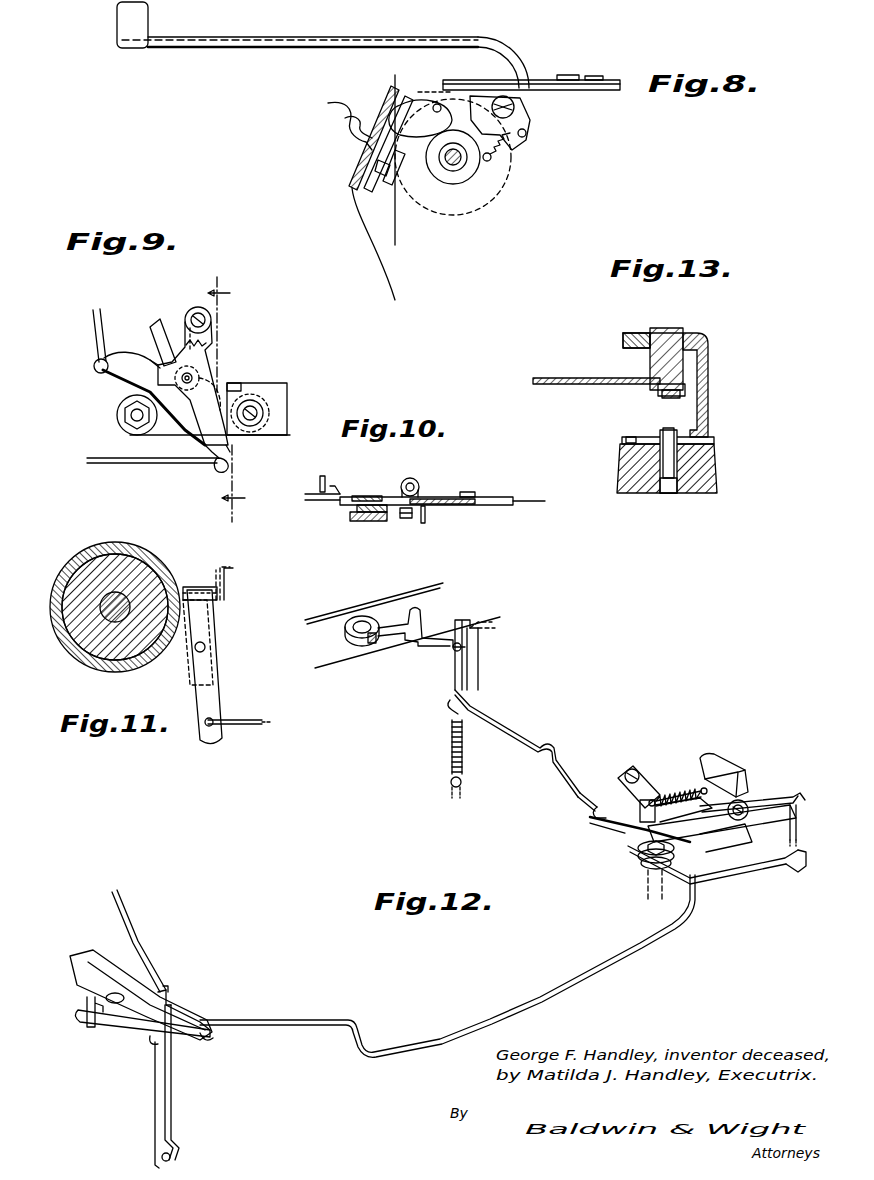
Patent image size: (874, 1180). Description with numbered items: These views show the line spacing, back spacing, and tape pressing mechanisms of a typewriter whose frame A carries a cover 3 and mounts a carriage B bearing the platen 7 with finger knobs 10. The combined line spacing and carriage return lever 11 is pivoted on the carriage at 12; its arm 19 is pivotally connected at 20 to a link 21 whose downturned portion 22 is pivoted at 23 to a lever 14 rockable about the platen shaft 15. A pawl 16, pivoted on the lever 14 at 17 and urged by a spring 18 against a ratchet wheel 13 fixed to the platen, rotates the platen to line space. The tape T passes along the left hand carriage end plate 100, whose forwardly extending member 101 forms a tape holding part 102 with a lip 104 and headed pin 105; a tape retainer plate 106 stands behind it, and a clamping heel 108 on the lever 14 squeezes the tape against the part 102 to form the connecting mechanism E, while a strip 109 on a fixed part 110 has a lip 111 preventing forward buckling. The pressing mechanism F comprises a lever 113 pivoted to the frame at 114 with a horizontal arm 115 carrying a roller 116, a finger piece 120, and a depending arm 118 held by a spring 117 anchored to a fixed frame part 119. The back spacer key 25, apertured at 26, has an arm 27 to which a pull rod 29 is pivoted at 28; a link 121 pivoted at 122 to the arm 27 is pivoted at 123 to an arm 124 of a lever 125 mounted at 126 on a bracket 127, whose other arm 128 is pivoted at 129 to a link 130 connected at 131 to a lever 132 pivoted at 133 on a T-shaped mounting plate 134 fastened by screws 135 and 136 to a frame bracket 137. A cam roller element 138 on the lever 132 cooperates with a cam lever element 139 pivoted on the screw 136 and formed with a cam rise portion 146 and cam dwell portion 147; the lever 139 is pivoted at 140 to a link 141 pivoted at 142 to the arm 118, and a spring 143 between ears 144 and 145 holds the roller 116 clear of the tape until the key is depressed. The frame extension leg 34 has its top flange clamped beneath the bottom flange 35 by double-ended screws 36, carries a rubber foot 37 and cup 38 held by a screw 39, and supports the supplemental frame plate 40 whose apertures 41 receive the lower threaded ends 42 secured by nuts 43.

In FIG. 8, the mask or cover 3 is at (326, 106).
In FIG. 11, the platen 7 is at (70, 658).
In FIG. 9, the finger knobs 10 is at (226, 398).
In FIG. 11, the finger knobs 10 is at (230, 524).
In FIG. 8, the combined line spacing and carriage return lever 11 is at (288, 37).
In FIG. 8, the pivot 12 is at (590, 78).
In FIG. 8, the ratchet wheel 13 is at (500, 185).
In FIG. 8, the lever 14 is at (455, 128).
In FIG. 8, the platen shaft 15 is at (450, 165).
In FIG. 11, the platen shaft 15 is at (100, 660).
In FIG. 8, the pawl 16 is at (528, 122).
In FIG. 8, the pivot 17 is at (515, 106).
In FIG. 8, the spring 18 is at (508, 160).
In FIG. 8, the arm 19 is at (578, 90).
In FIG. 8, the pivotal connection 20 is at (563, 75).
In FIG. 8, the link 21 is at (500, 75).
In FIG. 8, the downturned portion 22 is at (435, 100).
In FIG. 8, the pivot 23 is at (418, 190).
In FIG. 12, the back spacer key 25 is at (180, 1160).
In FIG. 12, the aperture 26 is at (160, 1155).
In FIG. 12, the vertically extending arm 27 is at (173, 1080).
In FIG. 12, the pivot 28 is at (172, 1000).
In FIG. 12, the pull rod 29 is at (140, 938).
In FIG. 13, the extension legs 34 is at (709, 404).
In FIG. 13, the bottom flange 35 is at (640, 330).
In FIG. 13, the double-ended screws 36 is at (648, 360).
In FIG. 13, the rubber supporting feet 37 is at (716, 470).
In FIG. 13, the cups 38 is at (714, 444).
In FIG. 13, the screws 39 is at (664, 495).
In FIG. 13, the supplemental frame plate 40 is at (553, 376).
In FIG. 13, the apertures 41 is at (625, 386).
In FIG. 13, the lower threaded ends 42 is at (668, 400).
In FIG. 13, the nuts 43 is at (658, 392).
In FIG. 8, the left hand carriage end plate 100 is at (397, 228).
In FIG. 8, the forwardly extending member 101 is at (385, 215).
In FIG. 8, the tape holding part 102 is at (384, 98).
In FIG. 8, the lip 104 is at (396, 88).
In FIG. 8, the headed pin 105 is at (378, 192).
In FIG. 8, the tape retainer plate 106 is at (375, 170).
In FIG. 8, the clamping heel 108 is at (356, 144).
In FIG. 8, the strip 109 is at (356, 160).
In FIG. 8, the fixed part 110 is at (372, 185).
In FIG. 8, the lip 111 is at (345, 125).
In FIG. 11, the lever 113 is at (228, 694).
In FIG. 12, the lever 113 is at (465, 612).
In FIG. 11, the pivot 114 is at (206, 645).
In FIG. 12, the pivot 114 is at (455, 682).
In FIG. 12, the horizontal arm 115 is at (425, 648).
In FIG. 11, the roller 116 is at (205, 585).
In FIG. 12, the roller 116 is at (364, 645).
In FIG. 12, the spring 117 is at (450, 758).
In FIG. 11, the depending arm 118 is at (192, 670).
In FIG. 12, the depending arm 118 is at (476, 700).
In FIG. 12, the fixed frame part 119 is at (440, 790).
In FIG. 11, the finger piece 120 is at (228, 566).
In FIG. 12, the finger piece 120 is at (428, 598).
In FIG. 12, the link 121 is at (130, 1042).
In FIG. 12, the pivot 122 is at (158, 1060).
In FIG. 12, the pivot 123 is at (90, 1030).
In FIG. 12, the arm 124 is at (86, 1018).
In FIG. 12, the lever 125 is at (116, 980).
In FIG. 12, the pivot 126 is at (125, 992).
In FIG. 12, the frame mounted bracket 127 is at (78, 960).
In FIG. 12, the arm 128 is at (188, 1022).
In FIG. 12, the pivot 129 is at (212, 1042).
In FIG. 9, the link 130 is at (135, 466).
In FIG. 10, the link 130 is at (304, 497).
In FIG. 12, the link 130 is at (436, 1026).
In FIG. 9, the connection 131 is at (208, 470).
In FIG. 12, the connection 131 is at (790, 882).
In FIG. 9, the lever 132 is at (232, 452).
In FIG. 10, the lever 132 is at (331, 511).
In FIG. 12, the lever 132 is at (722, 880).
In FIG. 9, the pivot 133 is at (212, 316).
In FIG. 10, the pivot 133 is at (478, 494).
In FIG. 12, the pivot 133 is at (634, 768).
In FIG. 9, the T-shaped mounting plate 134 is at (210, 335).
In FIG. 10, the T-shaped mounting plate 134 is at (450, 497).
In FIG. 12, the T-shaped mounting plate 134 is at (660, 792).
In FIG. 9, the screw 135 is at (117, 420).
In FIG. 12, the screw 135 is at (640, 860).
In FIG. 9, the screw 136 is at (272, 428).
In FIG. 12, the screw 136 is at (800, 772).
In FIG. 9, the frame bracket 137 is at (270, 402).
In FIG. 10, the frame bracket 137 is at (352, 520).
In FIG. 12, the frame bracket 137 is at (780, 790).
In FIG. 9, the cam roller element 138 is at (195, 372).
In FIG. 10, the cam roller element 138 is at (406, 518).
In FIG. 9, the cam lever element 139 is at (120, 378).
In FIG. 10, the cam lever element 139 is at (380, 520).
In FIG. 12, the cam lever element 139 is at (620, 828).
In FIG. 9, the pivot 140 is at (98, 372).
In FIG. 10, the pivot 140 is at (428, 516).
In FIG. 12, the pivot 140 is at (590, 818).
In FIG. 9, the link 141 is at (92, 334).
In FIG. 10, the link 141 is at (518, 508).
In FIG. 11, the link 141 is at (240, 728).
In FIG. 12, the link 141 is at (560, 785).
In FIG. 11, the pivot 142 is at (205, 728).
In FIG. 12, the pivot 142 is at (448, 706).
In FIG. 10, the spring 143 is at (410, 478).
In FIG. 12, the spring 143 is at (675, 792).
In FIG. 9, the ear 144 is at (242, 386).
In FIG. 12, the ear 144 is at (729, 776).
In FIG. 9, the ear 145 is at (124, 357).
In FIG. 10, the ear 145 is at (420, 492).
In FIG. 12, the ear 145 is at (640, 805).
In FIG. 9, the cam rise portion 146 is at (200, 372).
In FIG. 9, the cam dwell portion 147 is at (170, 316).
In FIG. 13, the frame A is at (704, 322).
In FIG. 12, the frame A is at (501, 653).
In FIG. 8, the carriage B is at (615, 86).
In FIG. 8, the mechanism for connecting the tape to the platen E is at (380, 88).
In FIG. 11, the mechanism for pressing the tape against the platen F is at (236, 610).
In FIG. 12, the mechanism for pressing the tape against the platen F is at (442, 676).
In FIG. 8, the type-impression-receiving tape T is at (375, 120).
In FIG. 11, the type-impression-receiving tape T is at (175, 560).
In FIG. 12, the type-impression-receiving tape T is at (340, 607).